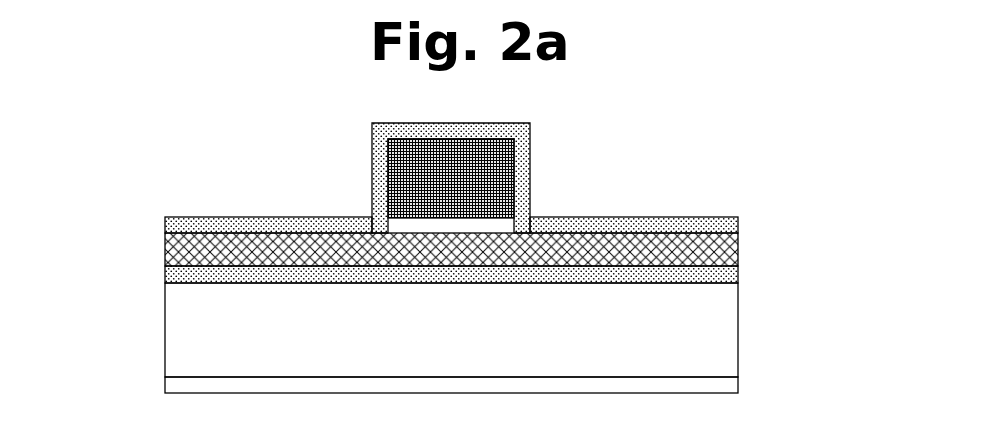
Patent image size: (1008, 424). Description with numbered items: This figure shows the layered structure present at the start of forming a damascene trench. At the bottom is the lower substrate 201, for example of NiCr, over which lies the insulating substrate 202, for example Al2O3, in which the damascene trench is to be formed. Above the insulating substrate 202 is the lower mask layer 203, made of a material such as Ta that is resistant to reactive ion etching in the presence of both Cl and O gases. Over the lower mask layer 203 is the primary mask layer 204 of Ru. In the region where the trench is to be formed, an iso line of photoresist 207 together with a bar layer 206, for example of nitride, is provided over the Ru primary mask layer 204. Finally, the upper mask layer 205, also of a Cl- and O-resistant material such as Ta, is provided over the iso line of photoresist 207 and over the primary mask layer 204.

The lower substrate 201 is at (165, 385).
The insulating substrate 202 is at (165, 330).
The lower mask layer 203 is at (165, 271).
The primary mask layer 204 is at (165, 247).
The upper mask layer 205 is at (165, 223).
The bar layer 206 is at (483, 218).
The iso line of photoresist 207 is at (515, 170).